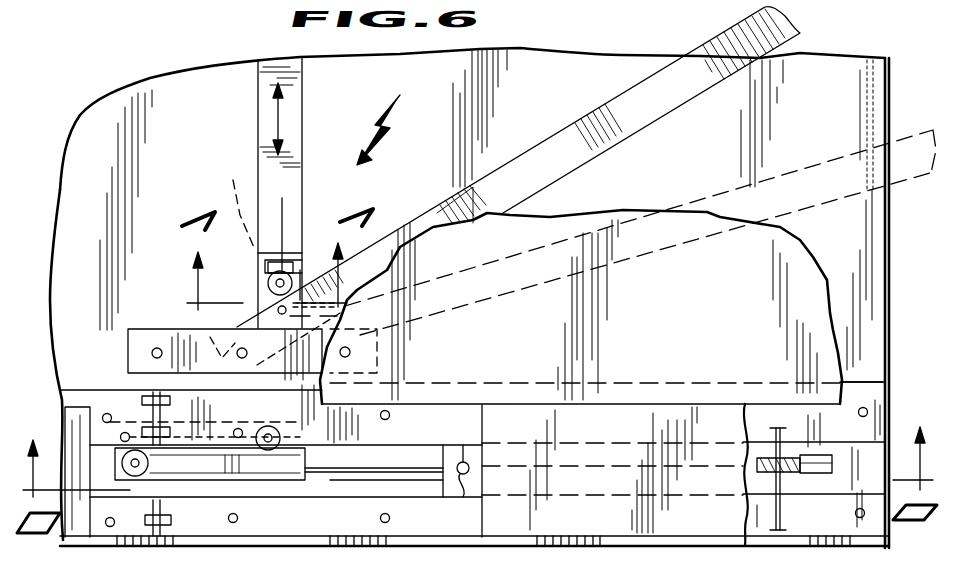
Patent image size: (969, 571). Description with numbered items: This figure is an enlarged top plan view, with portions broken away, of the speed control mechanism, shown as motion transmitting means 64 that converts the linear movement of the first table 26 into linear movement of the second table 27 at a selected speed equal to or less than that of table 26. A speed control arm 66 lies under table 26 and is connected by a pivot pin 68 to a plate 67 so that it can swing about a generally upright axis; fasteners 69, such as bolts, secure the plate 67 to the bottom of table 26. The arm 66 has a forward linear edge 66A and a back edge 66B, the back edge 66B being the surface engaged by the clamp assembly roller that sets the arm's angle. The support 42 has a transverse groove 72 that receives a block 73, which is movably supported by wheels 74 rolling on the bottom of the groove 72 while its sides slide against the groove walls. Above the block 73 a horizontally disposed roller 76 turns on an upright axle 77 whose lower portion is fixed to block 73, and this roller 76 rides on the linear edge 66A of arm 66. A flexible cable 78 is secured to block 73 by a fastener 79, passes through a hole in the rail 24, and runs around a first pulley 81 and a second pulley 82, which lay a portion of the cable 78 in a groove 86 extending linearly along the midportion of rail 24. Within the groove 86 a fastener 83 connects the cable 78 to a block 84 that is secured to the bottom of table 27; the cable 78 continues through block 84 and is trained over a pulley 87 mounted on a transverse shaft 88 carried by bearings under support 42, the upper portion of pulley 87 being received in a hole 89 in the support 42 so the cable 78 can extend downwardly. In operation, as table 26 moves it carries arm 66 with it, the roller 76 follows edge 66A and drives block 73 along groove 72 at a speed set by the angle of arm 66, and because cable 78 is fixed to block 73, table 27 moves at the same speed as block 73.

The rail 24 is at (876, 392).
The table 26 is at (798, 268).
The table 27 is at (665, 505).
The support 42 is at (866, 91).
The motion transmitting means 64 is at (390, 116).
The speed control arm 66 is at (576, 120).
The linear edge 66A is at (483, 176).
The back edge 66B is at (608, 152).
The plate 67 is at (165, 333).
The pivot pin 68 is at (238, 358).
The fasteners 69 is at (350, 352).
The groove 72 is at (265, 87).
The block 73 is at (280, 222).
The wheels 74 is at (232, 206).
The roller 76 is at (268, 285).
The axle 77 is at (300, 270).
The flexible cable 78 is at (365, 478).
The fastener 79 is at (272, 311).
The first pulley 81 is at (273, 452).
The second pulley 82 is at (147, 465).
The fastener 83 is at (465, 474).
The block 84 is at (467, 445).
The groove 86 is at (374, 483).
The pulley 87 is at (797, 480).
The transverse shaft 88 is at (778, 447).
The hole 89 is at (818, 460).